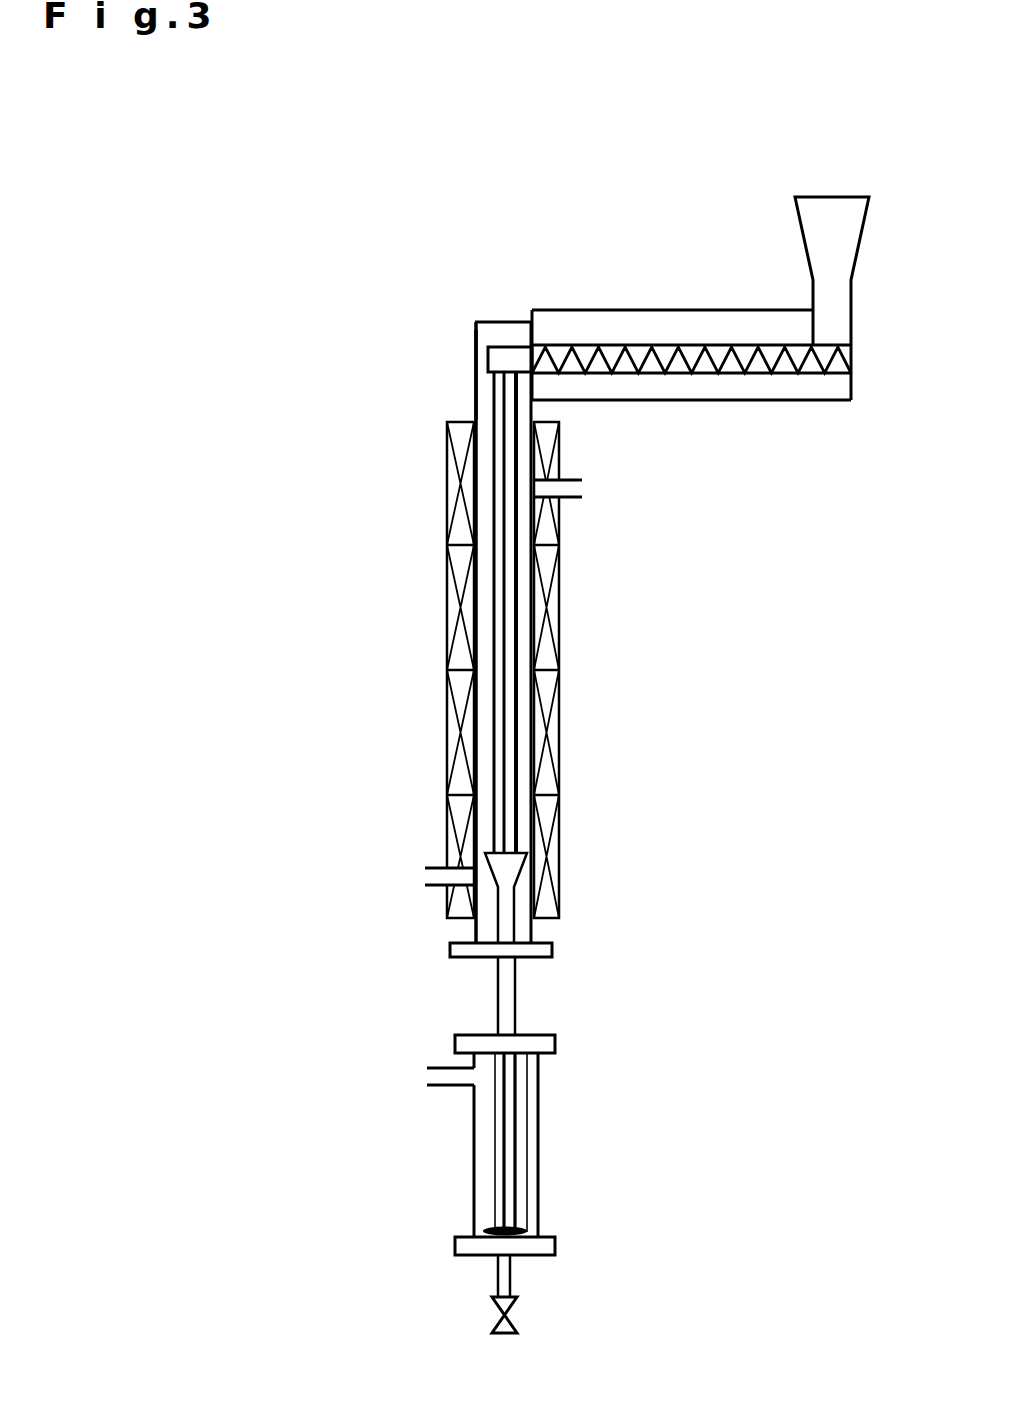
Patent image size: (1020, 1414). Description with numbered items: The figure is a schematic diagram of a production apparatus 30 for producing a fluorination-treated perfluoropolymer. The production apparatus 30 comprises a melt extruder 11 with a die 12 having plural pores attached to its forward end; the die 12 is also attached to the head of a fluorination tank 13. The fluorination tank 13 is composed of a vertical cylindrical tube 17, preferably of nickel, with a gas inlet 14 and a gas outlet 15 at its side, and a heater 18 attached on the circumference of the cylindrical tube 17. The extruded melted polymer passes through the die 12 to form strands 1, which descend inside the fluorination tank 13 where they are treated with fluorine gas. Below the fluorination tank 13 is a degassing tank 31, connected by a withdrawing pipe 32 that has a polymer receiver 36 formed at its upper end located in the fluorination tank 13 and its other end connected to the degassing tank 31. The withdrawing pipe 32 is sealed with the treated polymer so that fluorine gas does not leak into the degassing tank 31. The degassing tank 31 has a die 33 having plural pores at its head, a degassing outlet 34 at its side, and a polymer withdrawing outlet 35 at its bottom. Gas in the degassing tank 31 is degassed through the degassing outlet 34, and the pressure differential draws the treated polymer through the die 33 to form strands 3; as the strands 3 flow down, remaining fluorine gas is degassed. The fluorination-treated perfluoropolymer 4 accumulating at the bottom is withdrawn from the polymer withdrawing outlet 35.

The production apparatus 30 is at (404, 193).
The melt extruder 11 is at (670, 310).
The die 12 is at (503, 345).
The cylindrical tube 17 is at (473, 380).
The strands 1 is at (517, 748).
The fluorination tank 13 is at (512, 670).
The heater 18 is at (446, 632).
The gas inlet 14 is at (573, 480).
The gas outlet 15 is at (437, 866).
The polymer receiver 36 is at (510, 868).
The withdrawing pipe 32 is at (515, 990).
The die 33 is at (545, 1047).
The degassing tank 31 is at (538, 1133).
The strands 3 is at (517, 1102).
The fluorination-treated perfluoropolymer 4 is at (525, 1220).
The degassing outlet 34 is at (440, 1090).
The polymer withdrawing outlet 35 is at (513, 1270).